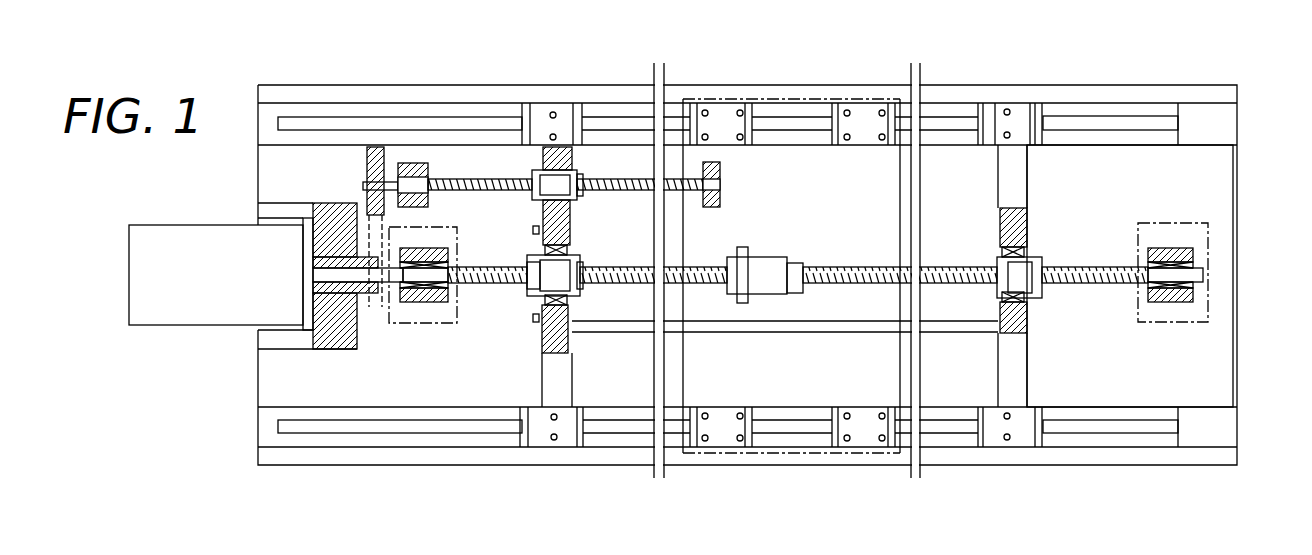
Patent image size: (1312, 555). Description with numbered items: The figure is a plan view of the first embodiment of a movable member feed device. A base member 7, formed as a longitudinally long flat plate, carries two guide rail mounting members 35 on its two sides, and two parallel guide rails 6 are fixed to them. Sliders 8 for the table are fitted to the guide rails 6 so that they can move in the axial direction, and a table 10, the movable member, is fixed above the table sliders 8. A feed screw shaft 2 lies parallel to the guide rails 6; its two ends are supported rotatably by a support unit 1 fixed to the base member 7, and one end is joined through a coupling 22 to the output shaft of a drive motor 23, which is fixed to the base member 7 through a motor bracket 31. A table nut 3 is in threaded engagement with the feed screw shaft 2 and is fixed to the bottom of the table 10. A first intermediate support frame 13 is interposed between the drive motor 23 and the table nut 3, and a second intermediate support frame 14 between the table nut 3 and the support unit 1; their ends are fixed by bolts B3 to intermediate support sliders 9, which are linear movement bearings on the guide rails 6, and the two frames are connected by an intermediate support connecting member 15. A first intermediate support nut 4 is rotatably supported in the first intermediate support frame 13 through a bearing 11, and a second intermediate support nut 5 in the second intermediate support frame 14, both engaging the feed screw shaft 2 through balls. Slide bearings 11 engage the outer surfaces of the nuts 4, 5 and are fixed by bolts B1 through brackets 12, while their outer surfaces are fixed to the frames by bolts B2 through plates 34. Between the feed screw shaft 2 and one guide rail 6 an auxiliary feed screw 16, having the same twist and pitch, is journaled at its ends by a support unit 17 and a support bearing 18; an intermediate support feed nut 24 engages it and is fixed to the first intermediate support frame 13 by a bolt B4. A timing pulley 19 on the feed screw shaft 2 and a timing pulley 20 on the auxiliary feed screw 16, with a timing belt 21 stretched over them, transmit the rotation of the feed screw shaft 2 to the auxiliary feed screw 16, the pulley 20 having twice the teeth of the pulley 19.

The support unit 1 is at (425, 325).
The feed screw shaft 2 is at (828, 267).
The table nut 3 is at (765, 258).
The first intermediate support nut 4 is at (520, 310).
The second intermediate support nut 5 is at (1030, 250).
The guide rail 6 is at (1097, 120).
The base member 7 is at (1230, 182).
The slider for table 8 is at (718, 115).
The intermediate support slider 9 is at (583, 110).
The table 10 is at (782, 455).
The slide bearing 11 is at (548, 332).
The bracket 12 is at (580, 300).
The first intermediate support frame 13 is at (565, 450).
The second intermediate support frame 14 is at (1005, 400).
The intermediate support connecting member 15 is at (770, 332).
The auxiliary feed screw 16 is at (455, 179).
The support unit 17 is at (418, 163).
The support bearing 18 is at (722, 170).
The timing pulley 19 is at (395, 302).
The timing pulley 20 is at (383, 148).
The timing belt 21 is at (340, 220).
The coupling 22 is at (330, 348).
The drive motor 23 is at (205, 325).
The intermediate support feed nut 24 is at (507, 148).
The motor bracket 31 is at (345, 350).
The plate 34 is at (545, 330).
The guide rail mounting member 35 is at (1193, 118).
The bolt B1 is at (585, 295).
The bolt B2 is at (530, 230).
The bolt B3 is at (1007, 112).
The bolt B4 is at (583, 204).